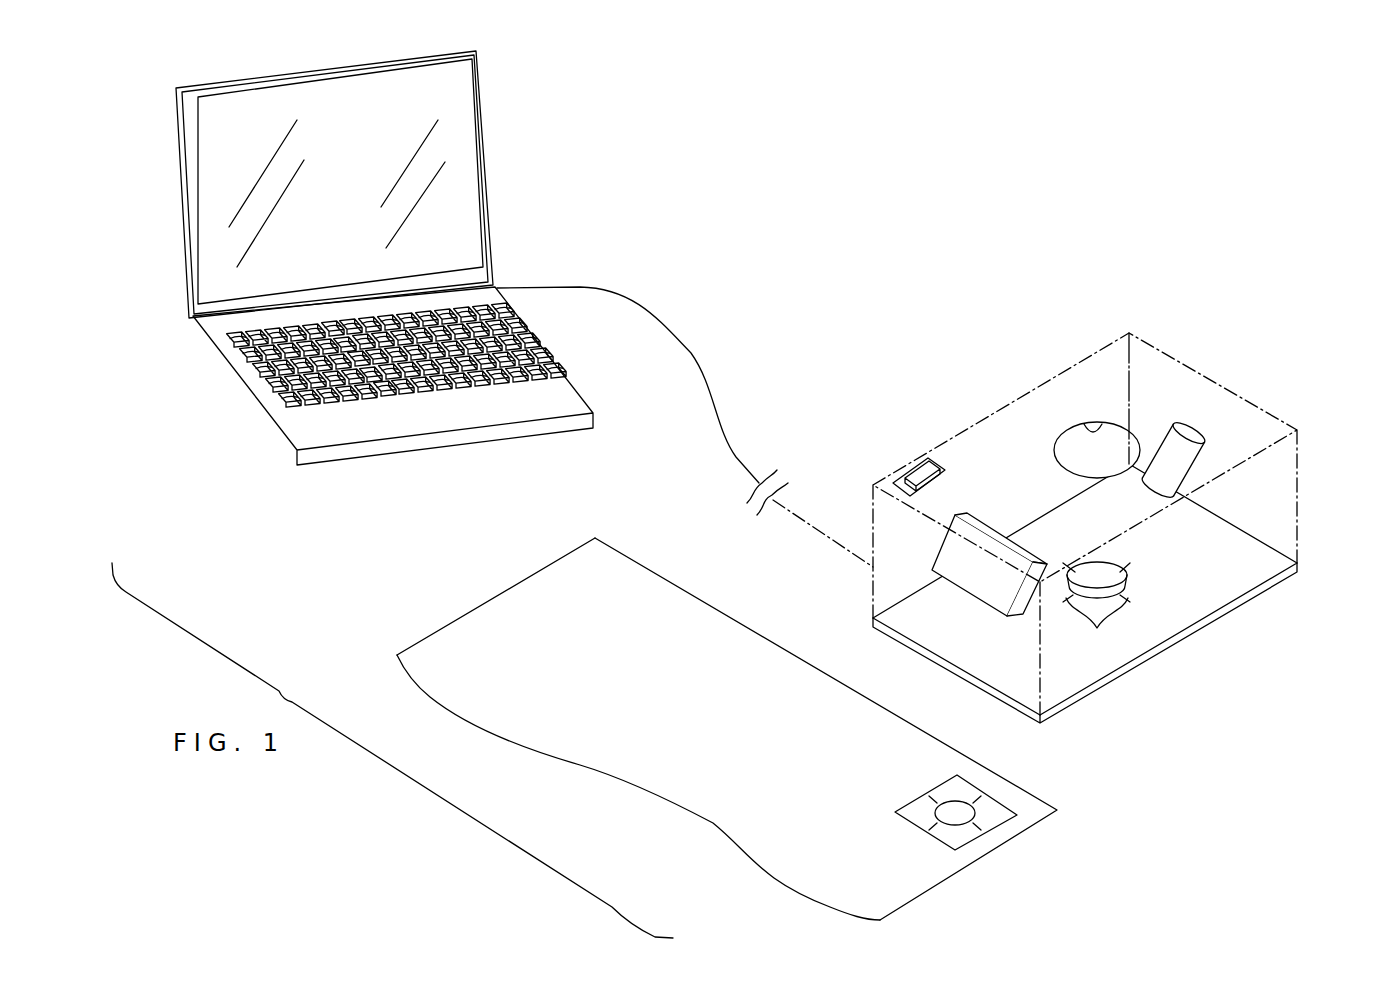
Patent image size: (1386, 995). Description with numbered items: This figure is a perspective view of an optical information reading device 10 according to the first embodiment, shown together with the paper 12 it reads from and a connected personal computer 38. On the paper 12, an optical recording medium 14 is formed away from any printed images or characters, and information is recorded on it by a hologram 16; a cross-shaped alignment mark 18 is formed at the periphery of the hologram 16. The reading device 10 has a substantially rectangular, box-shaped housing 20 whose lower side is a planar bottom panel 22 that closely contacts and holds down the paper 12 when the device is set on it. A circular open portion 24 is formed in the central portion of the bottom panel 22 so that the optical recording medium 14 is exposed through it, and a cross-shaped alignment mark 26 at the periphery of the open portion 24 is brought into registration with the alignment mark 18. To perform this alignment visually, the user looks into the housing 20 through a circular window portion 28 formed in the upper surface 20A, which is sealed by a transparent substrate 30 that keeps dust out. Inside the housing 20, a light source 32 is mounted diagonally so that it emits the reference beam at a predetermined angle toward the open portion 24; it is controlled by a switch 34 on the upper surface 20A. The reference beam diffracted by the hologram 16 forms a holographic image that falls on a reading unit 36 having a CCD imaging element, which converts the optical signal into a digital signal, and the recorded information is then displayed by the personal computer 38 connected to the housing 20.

The optical information reading device 10 is at (1118, 504).
The paper 12 is at (907, 888).
The optical recording medium 14 is at (960, 837).
The hologram 16 is at (957, 800).
The alignment mark 18 is at (978, 818).
The housing 20 is at (1040, 383).
The upper surface 20A is at (980, 425).
The bottom panel 22 is at (1133, 643).
The open portion 24 is at (1128, 578).
The alignment mark 26 is at (1097, 628).
The window portion 28 is at (1086, 421).
The transparent substrate 30 is at (1062, 451).
The light source 32 is at (1185, 432).
The switch 34 is at (927, 455).
The reading unit 36 is at (970, 582).
The personal computer 38 is at (496, 170).